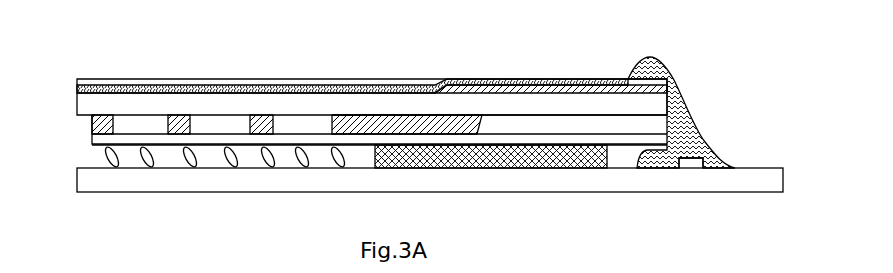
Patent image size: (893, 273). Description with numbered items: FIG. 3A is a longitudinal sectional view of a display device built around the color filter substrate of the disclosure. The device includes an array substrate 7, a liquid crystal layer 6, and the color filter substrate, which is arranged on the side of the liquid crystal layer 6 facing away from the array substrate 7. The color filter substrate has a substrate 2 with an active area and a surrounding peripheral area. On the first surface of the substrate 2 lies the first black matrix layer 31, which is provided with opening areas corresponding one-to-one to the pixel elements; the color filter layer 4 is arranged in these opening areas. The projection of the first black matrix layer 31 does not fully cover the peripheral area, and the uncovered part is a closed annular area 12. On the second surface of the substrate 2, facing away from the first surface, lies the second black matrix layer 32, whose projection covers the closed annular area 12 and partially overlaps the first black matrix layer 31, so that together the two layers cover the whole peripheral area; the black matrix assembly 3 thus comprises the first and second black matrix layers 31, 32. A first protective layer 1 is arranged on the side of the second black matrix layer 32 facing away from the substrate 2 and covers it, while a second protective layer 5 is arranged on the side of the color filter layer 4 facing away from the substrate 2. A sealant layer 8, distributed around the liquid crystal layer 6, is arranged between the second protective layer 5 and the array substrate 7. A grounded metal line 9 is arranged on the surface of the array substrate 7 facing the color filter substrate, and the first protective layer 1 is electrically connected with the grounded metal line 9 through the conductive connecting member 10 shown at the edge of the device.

The first protective layer 1 is at (92, 88).
The substrate 2 is at (100, 99).
The electrode assembly 3 is at (498, 76).
The color filter layer 4 is at (117, 124).
The second protective layer 5 is at (100, 141).
The liquid crystal layer 6 is at (123, 165).
The array substrate 7 is at (123, 180).
The sealant layer 8 is at (590, 170).
The grounded metal line 9 is at (690, 165).
The sealant 10 is at (693, 118).
The closed annular area 12 is at (548, 125).
The first black matrix layer 31 is at (463, 118).
The second black matrix layer 32 is at (445, 83).